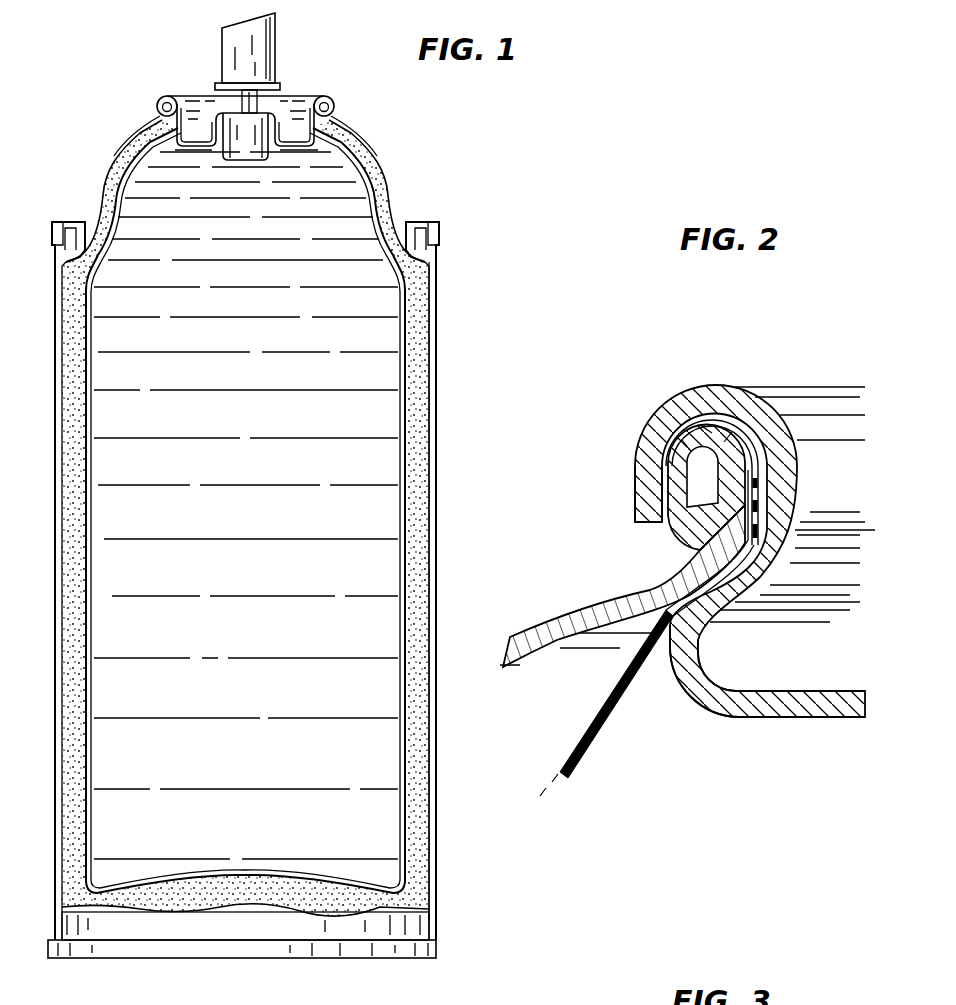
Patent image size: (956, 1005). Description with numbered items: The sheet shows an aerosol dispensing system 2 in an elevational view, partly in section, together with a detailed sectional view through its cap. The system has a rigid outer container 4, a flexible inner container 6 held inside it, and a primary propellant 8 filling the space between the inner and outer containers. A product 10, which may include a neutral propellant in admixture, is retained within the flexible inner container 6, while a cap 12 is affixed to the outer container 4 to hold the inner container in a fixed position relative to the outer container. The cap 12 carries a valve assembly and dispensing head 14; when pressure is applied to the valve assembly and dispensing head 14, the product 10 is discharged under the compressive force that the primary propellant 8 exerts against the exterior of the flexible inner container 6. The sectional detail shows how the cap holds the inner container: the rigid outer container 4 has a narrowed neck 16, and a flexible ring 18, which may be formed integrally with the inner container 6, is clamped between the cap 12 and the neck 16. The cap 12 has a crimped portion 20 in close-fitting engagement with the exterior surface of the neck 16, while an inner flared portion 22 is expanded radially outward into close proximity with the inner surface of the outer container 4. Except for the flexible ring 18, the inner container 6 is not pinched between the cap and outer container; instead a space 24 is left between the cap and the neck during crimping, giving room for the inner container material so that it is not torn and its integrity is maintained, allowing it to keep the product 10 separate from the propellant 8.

In FIG. 1, the aerosol dispensing system 2 is at (445, 362).
In FIG. 1, the rigid outer container 4 is at (437, 466).
In FIG. 2, the rigid outer container 4 is at (588, 608).
In FIG. 1, the flexible inner container 6 is at (410, 506).
In FIG. 2, the flexible inner container 6 is at (573, 723).
In FIG. 1, the primary propellant 8 is at (412, 731).
In FIG. 1, the product 10 is at (274, 574).
In FIG. 1, the cap 12 is at (292, 91).
In FIG. 2, the cap 12 is at (813, 384).
In FIG. 1, the valve assembly and dispensing head 14 is at (224, 58).
In FIG. 2, the narrowed neck 16 is at (680, 528).
In FIG. 2, the flexible ring 18 is at (718, 418).
In FIG. 2, the crimped portion 20 is at (641, 492).
In FIG. 2, the inner flared portion 22 is at (697, 659).
In FIG. 2, the space 24 is at (772, 498).